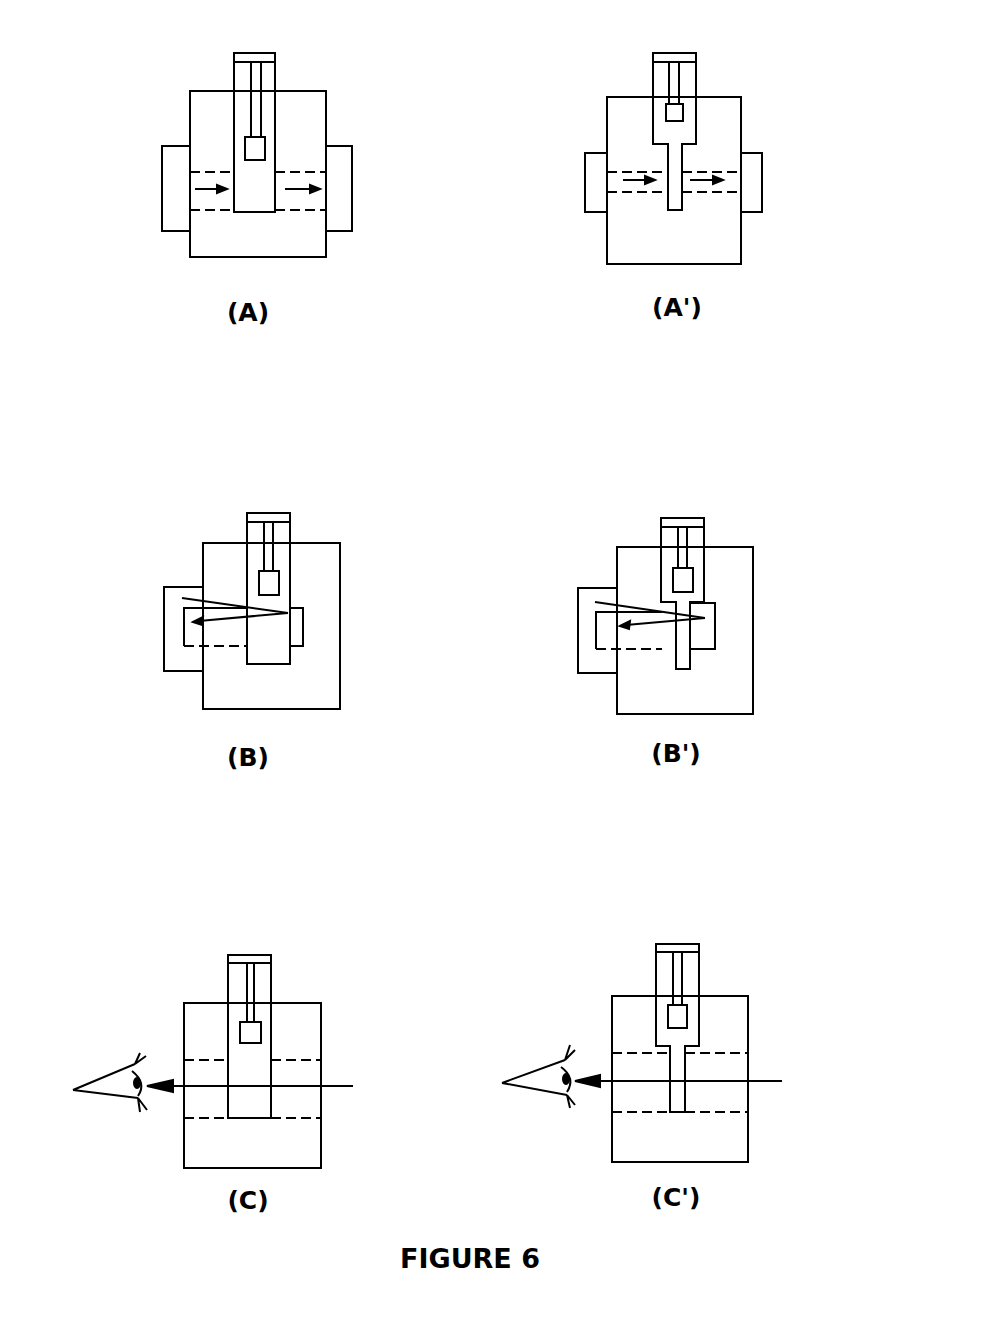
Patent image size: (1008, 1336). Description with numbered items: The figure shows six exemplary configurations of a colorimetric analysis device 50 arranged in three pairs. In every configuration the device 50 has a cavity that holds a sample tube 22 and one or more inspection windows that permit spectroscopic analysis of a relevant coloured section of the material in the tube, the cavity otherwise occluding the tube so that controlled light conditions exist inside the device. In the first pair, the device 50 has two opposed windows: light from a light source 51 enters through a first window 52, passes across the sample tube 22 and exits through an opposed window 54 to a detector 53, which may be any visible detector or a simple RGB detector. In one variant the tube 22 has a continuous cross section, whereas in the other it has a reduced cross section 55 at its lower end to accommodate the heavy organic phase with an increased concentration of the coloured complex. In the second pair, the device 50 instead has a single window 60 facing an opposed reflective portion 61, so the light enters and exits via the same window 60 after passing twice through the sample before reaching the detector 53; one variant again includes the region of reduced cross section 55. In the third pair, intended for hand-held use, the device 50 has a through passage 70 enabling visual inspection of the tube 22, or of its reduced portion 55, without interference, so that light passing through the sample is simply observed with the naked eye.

The sample tube 22 is at (267, 75).
The device 50 is at (302, 115).
The light source 51 is at (175, 193).
The first window 52 is at (213, 200).
The detector 53 is at (338, 178).
The opposed window 54 is at (298, 200).
The reduced cross section 55 is at (677, 202).
The single window 60 is at (233, 635).
The mirror / reflector 61 is at (300, 627).
The through passage 70 is at (307, 1074).